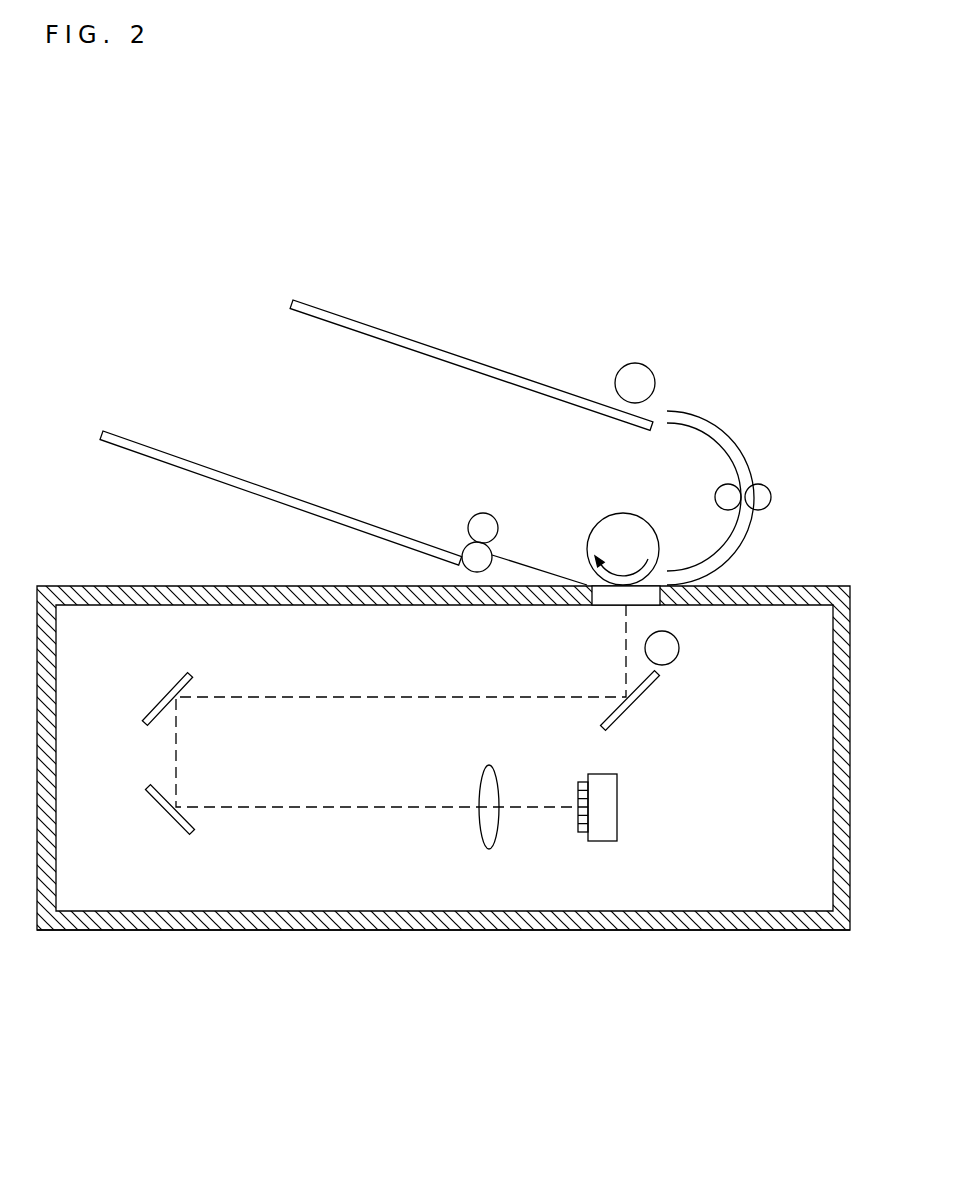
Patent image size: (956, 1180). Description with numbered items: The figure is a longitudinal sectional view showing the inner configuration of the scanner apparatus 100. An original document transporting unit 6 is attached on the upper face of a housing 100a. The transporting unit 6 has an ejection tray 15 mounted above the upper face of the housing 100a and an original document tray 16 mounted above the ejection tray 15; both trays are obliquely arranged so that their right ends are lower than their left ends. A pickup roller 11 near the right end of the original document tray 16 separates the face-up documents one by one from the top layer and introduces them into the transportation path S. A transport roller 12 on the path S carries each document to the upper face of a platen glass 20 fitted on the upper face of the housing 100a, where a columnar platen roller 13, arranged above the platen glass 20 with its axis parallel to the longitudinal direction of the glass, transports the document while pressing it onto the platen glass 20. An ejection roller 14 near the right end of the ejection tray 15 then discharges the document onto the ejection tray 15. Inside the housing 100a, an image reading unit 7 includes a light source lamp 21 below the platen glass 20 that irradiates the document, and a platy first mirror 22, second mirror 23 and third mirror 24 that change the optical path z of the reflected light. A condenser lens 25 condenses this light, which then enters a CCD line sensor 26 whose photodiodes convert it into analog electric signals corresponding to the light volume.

The scanner apparatus 100 is at (134, 185).
The housing 100a is at (612, 931).
The original document transporting unit 6 is at (475, 388).
The image reading unit 7 is at (446, 791).
The pickup roller 11 is at (655, 373).
The transport roller 12 is at (771, 493).
The platen roller 13 is at (607, 515).
The ejection roller 14 is at (478, 513).
The ejection tray 15 is at (122, 437).
The original document tray 16 is at (317, 307).
The platen glass 20 is at (600, 607).
The light source lamp 21 is at (679, 648).
The first mirror 22 is at (627, 712).
The second mirror 23 is at (157, 703).
The third mirror 24 is at (170, 822).
The condenser lens 25 is at (495, 842).
The CCD line sensor 26 is at (617, 810).
The transportation path S is at (720, 430).
The optical path z is at (334, 697).